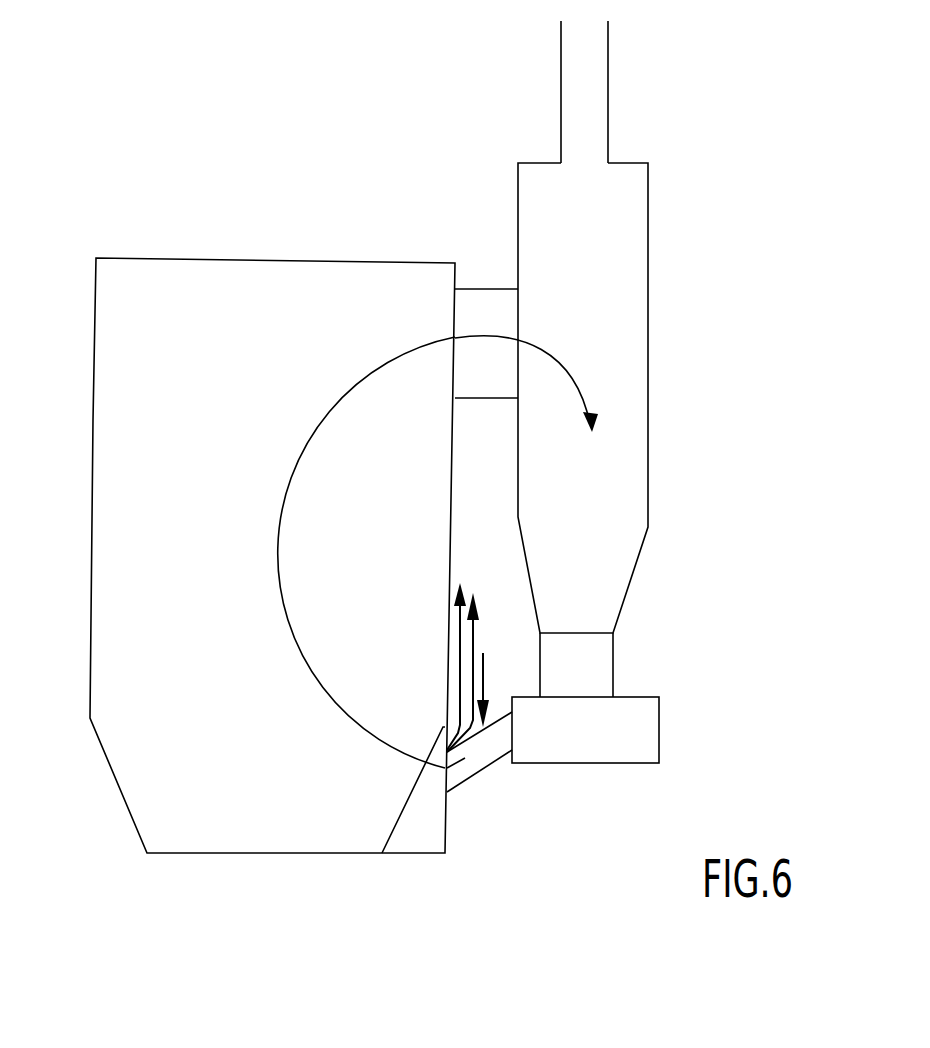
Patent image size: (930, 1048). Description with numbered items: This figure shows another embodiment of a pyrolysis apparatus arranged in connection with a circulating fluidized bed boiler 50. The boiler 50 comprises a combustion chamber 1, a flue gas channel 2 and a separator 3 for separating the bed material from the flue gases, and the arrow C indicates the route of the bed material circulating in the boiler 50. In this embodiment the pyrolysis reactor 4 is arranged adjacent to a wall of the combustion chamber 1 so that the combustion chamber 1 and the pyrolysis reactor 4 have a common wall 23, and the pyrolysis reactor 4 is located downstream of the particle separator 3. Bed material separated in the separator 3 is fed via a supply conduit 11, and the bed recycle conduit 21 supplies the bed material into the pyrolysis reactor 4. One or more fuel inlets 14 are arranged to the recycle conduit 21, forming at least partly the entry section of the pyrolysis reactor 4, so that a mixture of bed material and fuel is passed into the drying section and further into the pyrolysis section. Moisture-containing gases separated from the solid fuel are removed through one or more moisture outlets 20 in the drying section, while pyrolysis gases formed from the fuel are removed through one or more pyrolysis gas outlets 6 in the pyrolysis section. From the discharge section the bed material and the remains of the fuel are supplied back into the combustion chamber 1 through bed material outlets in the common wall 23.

The combustion chamber 1 is at (222, 527).
The flue gas channel 2 is at (581, 88).
The separator 3 is at (625, 245).
The pyrolysis reactor 4 is at (415, 832).
The pyrolysis gas outlet 6 is at (461, 638).
The supply conduit 11 is at (602, 670).
The fuel inlet 14 is at (502, 673).
The moisture outlet 20 is at (495, 667).
The recycle conduit 21 is at (475, 758).
The common wall 23 is at (445, 748).
The circulating fluidized bed boiler 50 is at (222, 258).
The route of the bed material C is at (305, 425).